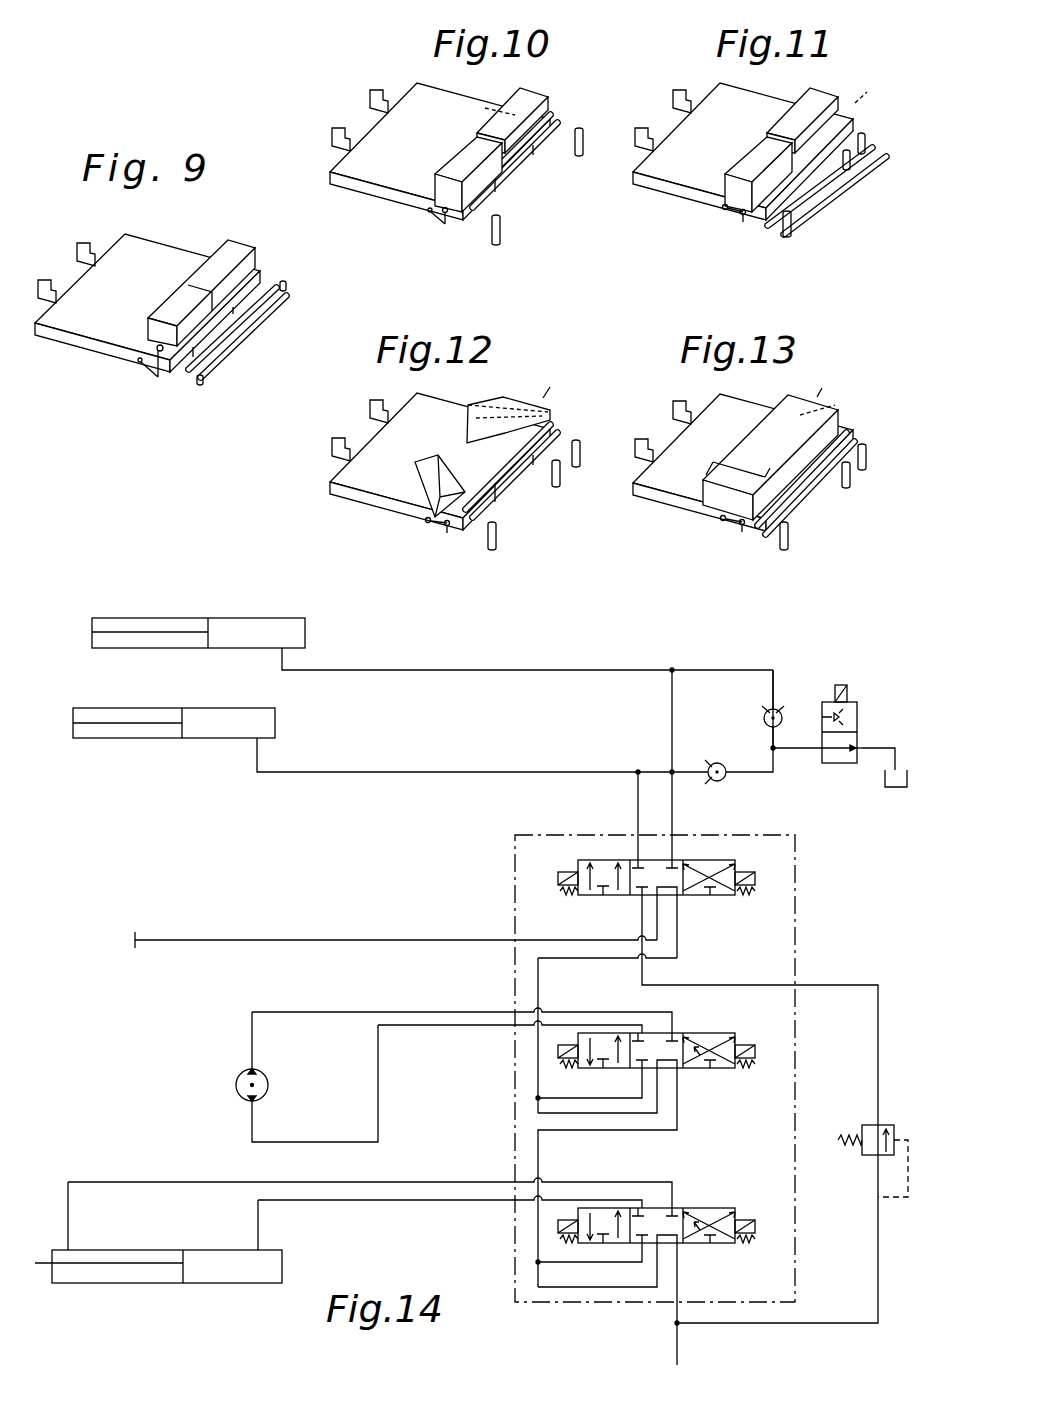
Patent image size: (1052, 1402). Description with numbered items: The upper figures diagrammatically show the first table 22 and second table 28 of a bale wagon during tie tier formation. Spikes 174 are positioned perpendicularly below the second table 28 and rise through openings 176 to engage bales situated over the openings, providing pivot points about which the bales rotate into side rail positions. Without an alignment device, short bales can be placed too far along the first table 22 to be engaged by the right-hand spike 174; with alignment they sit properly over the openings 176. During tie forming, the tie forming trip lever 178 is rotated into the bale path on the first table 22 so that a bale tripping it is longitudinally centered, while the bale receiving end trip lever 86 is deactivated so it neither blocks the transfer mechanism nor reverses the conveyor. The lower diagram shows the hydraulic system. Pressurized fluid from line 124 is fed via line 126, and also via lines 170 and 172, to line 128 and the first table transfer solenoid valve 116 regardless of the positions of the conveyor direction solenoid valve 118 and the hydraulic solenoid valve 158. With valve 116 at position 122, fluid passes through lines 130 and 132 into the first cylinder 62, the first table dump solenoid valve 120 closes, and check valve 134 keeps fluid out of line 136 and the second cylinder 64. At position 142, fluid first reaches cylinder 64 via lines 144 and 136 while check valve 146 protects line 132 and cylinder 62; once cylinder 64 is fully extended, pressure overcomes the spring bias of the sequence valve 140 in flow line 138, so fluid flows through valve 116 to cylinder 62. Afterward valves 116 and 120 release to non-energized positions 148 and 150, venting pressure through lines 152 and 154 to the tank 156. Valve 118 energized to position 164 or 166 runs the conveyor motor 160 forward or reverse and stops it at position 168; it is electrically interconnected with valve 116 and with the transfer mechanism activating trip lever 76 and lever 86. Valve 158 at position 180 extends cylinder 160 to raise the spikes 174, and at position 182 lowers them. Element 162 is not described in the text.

In FIG. 9, the first table 22 is at (246, 333).
In FIG. 10, the first table 22 is at (513, 168).
In FIG. 11, the first table 22 is at (828, 193).
In FIG. 12, the first table 22 is at (510, 487).
In FIG. 13, the first table 22 is at (807, 483).
In FIG. 9, the second table 28 is at (80, 293).
In FIG. 10, the second table 28 is at (368, 140).
In FIG. 11, the second table 28 is at (673, 140).
In FIG. 12, the second table 28 is at (363, 453).
In FIG. 13, the second table 28 is at (667, 452).
In FIG. 9, the transfer mechanism activating trip lever 76 is at (286, 287).
In FIG. 10, the transfer mechanism activating trip lever 76 is at (579, 128).
In FIG. 11, the transfer mechanism activating trip lever 76 is at (865, 135).
In FIG. 12, the transfer mechanism activating trip lever 76 is at (578, 442).
In FIG. 13, the transfer mechanism activating trip lever 76 is at (866, 447).
In FIG. 9, the bale receiving end trip lever 86 is at (203, 383).
In FIG. 10, the bale receiving end trip lever 86 is at (499, 245).
In FIG. 11, the bale receiving end trip lever 86 is at (792, 228).
In FIG. 12, the bale receiving end trip lever 86 is at (502, 547).
In FIG. 13, the bale receiving end trip lever 86 is at (790, 543).
In FIG. 9, the spikes 174 is at (158, 378).
In FIG. 10, the spikes 174 is at (445, 213).
In FIG. 11, the spikes 174 is at (728, 228).
In FIG. 12, the spikes 174 is at (438, 547).
In FIG. 13, the spikes 174 is at (742, 543).
In FIG. 9, the openings 176 is at (229, 272).
In FIG. 10, the openings 176 is at (508, 96).
In FIG. 11, the openings 176 is at (817, 125).
In FIG. 12, the openings 176 is at (523, 402).
In FIG. 13, the openings 176 is at (847, 408).
In FIG. 11, the tie forming trip lever 178 is at (850, 168).
In FIG. 12, the tie forming trip lever 178 is at (562, 483).
In FIG. 13, the tie forming trip lever 178 is at (850, 483).
In FIG. 14, the first hydraulic cylinder 62 is at (236, 617).
In FIG. 14, the second hydraulic cylinder 64 is at (140, 740).
In FIG. 14, the first table transfer solenoid valve 116 is at (686, 856).
In FIG. 14, the conveyor direction solenoid valve 118 is at (717, 1076).
In FIG. 14, the first table dump solenoid valve 120 is at (866, 700).
In FIG. 14, the position of valve 116 122 is at (586, 860).
In FIG. 14, the line 124 is at (678, 1355).
In FIG. 14, the line 126 is at (660, 1130).
In FIG. 14, the line 128 is at (662, 958).
In FIG. 14, the line 130 is at (671, 720).
In FIG. 14, the line 132 is at (412, 668).
In FIG. 14, the check valve 134 is at (722, 786).
In FIG. 14, the line 136 is at (381, 770).
In FIG. 14, the flow line 138 is at (878, 1008).
In FIG. 14, the sequence valve 140 is at (862, 1125).
In FIG. 14, the position of valve 116 142 is at (728, 862).
In FIG. 14, the line 144 is at (638, 808).
In FIG. 14, the check valve 146 is at (763, 716).
In FIG. 14, the non-energized position of valve 116 148 is at (652, 852).
In FIG. 14, the non-energized position of valve 120 150 is at (862, 740).
In FIG. 14, the line 152 is at (802, 750).
In FIG. 14, the line 154 is at (905, 760).
In FIG. 14, the tank 156 is at (893, 790).
In FIG. 14, the hydraulic solenoid valve 158 is at (712, 1251).
In FIG. 14, the hydraulic cylinder 160 is at (221, 1250).
In FIG. 14, the pump 162 is at (236, 1086).
In FIG. 14, the position of valve 118 164 is at (601, 1030).
In FIG. 14, the position of valve 118 166 is at (735, 1032).
In FIG. 14, the non-energized position of valve 118 168 is at (683, 1030).
In FIG. 14, the line 170 is at (583, 1268).
In FIG. 14, the line 172 is at (566, 1098).
In FIG. 14, the position of valve 158 180 is at (604, 1205).
In FIG. 14, the position of valve 158 182 is at (722, 1205).